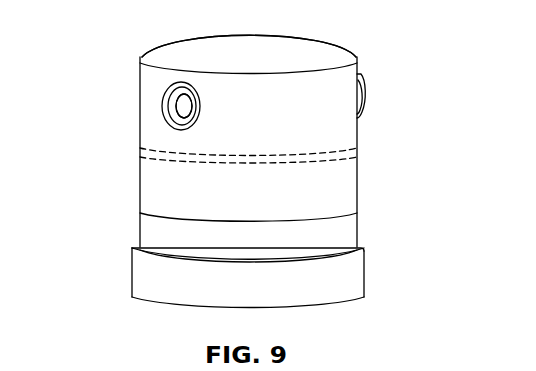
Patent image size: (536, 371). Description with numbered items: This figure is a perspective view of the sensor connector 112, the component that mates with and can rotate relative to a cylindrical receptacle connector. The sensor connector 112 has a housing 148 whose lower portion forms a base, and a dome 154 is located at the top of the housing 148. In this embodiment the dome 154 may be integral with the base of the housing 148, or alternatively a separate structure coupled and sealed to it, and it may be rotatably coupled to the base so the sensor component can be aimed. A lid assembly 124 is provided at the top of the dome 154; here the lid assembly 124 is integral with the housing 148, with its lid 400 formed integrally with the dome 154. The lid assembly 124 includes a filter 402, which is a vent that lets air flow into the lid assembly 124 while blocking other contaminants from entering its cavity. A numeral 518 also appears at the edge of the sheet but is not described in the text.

The sensor connector 112 is at (401, 92).
The lid assembly 124 is at (148, 100).
The housing 148 is at (384, 229).
The dome 154 is at (350, 198).
The lid 400 is at (312, 88).
The filter 402 is at (172, 110).
The component 518 is at (509, 330).